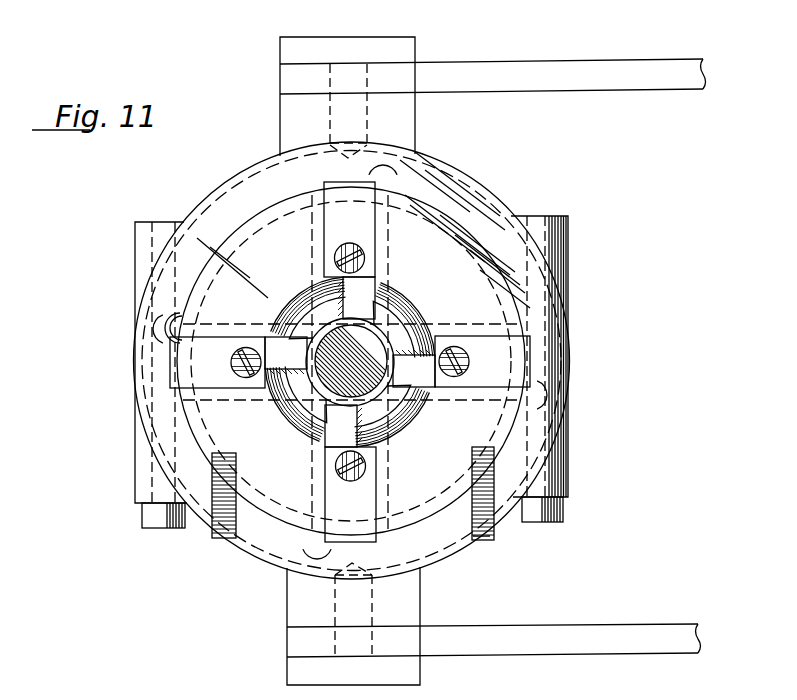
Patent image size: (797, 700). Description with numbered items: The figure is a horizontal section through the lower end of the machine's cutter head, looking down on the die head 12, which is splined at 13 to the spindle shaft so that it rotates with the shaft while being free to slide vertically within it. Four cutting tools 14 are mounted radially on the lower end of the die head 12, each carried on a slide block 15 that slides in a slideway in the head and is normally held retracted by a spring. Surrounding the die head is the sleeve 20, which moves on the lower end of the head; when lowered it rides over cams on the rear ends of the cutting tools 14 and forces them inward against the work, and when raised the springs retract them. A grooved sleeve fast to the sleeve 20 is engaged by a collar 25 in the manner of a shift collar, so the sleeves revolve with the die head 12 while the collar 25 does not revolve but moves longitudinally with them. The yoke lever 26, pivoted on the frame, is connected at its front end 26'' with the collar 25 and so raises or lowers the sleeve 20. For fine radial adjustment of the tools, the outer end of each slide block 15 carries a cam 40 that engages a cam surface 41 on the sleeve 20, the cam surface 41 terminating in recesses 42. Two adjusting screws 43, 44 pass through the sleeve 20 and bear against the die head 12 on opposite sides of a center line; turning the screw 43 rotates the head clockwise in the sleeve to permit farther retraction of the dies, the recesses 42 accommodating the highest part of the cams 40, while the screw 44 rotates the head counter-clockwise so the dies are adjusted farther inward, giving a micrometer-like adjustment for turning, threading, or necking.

The die head 12 is at (485, 297).
The spline 13 is at (462, 280).
The cutting tool 14 is at (232, 384).
The slide block 15 is at (486, 493).
The sleeve 20 is at (570, 371).
The collar 25 is at (478, 539).
The yoke lever 26 is at (493, 358).
The front end of yoke lever 26'' is at (347, 349).
The cam 40 is at (173, 358).
The cam surface 41 is at (173, 372).
The recess 42 is at (168, 315).
The adjusting screw 43 is at (212, 527).
The adjusting screw 44 is at (493, 516).